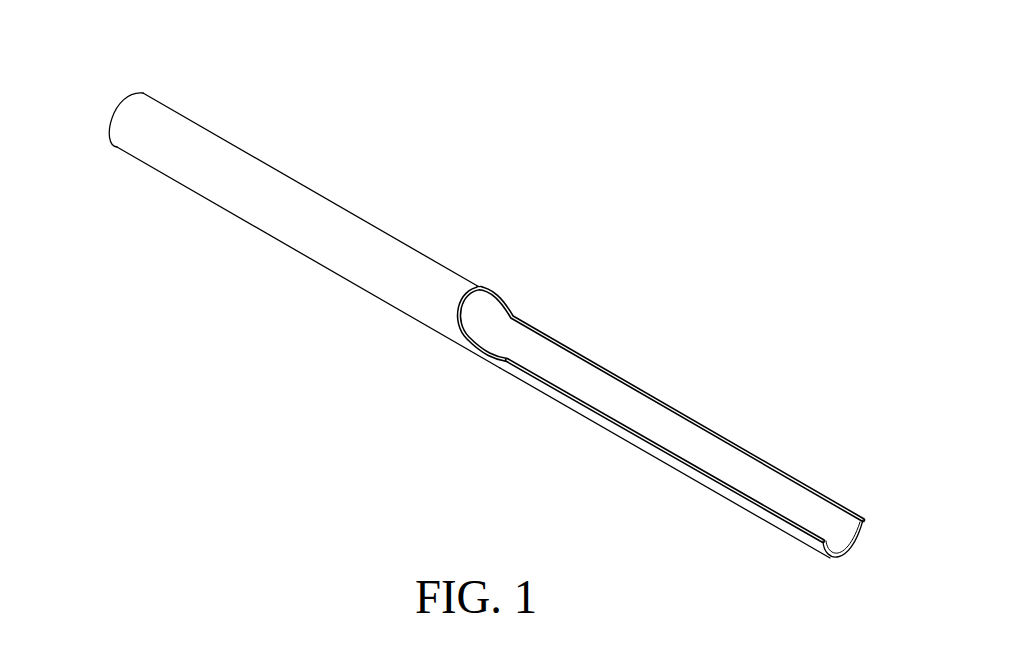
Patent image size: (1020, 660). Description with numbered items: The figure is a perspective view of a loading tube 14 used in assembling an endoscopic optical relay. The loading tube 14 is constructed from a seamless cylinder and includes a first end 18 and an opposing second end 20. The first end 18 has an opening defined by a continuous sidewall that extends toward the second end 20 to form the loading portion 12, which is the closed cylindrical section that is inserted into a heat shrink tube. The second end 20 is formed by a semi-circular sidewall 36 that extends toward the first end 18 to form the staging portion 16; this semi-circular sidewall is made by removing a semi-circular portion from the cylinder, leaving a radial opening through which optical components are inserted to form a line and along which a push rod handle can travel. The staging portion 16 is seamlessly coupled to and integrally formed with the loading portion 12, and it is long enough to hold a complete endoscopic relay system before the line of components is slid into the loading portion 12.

The loading portion 12 is at (481, 260).
The loading tube 14 is at (388, 341).
The staging portion 16 is at (851, 478).
The first end 18 is at (117, 111).
The second end 20 is at (853, 545).
The sidewall 36 is at (740, 495).